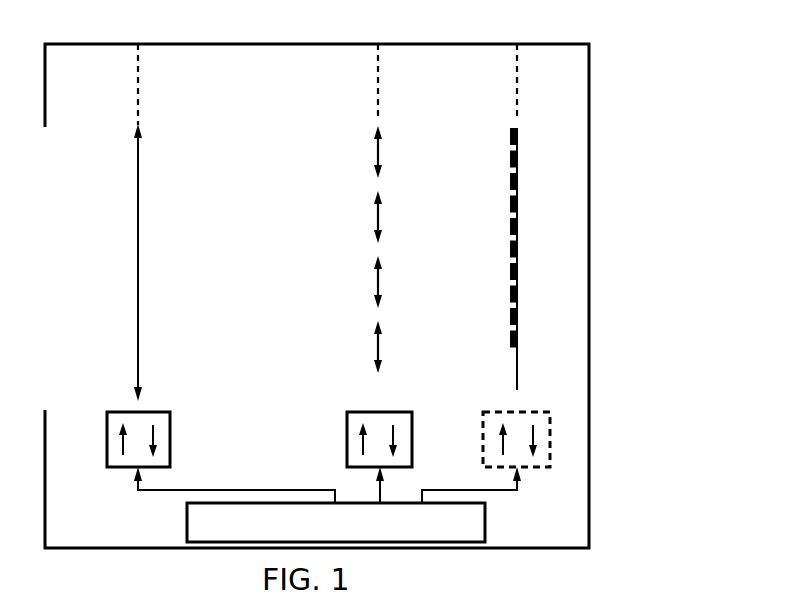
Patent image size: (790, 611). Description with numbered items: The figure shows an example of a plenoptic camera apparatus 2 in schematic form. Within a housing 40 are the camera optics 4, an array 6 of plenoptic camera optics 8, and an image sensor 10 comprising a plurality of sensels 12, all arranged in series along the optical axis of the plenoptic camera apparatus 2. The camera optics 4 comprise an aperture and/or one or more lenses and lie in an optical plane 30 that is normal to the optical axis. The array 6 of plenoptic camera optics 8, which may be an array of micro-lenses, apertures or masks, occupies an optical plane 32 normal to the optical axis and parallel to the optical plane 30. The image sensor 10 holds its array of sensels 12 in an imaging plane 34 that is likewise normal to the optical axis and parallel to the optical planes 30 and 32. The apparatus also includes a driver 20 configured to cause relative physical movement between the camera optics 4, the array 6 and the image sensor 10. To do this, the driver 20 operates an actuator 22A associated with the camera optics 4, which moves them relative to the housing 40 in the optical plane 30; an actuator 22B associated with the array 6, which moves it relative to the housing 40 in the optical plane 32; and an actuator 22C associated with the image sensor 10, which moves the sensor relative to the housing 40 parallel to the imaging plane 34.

The plenoptic camera apparatus 2 is at (602, 40).
The camera optics 4 is at (137, 122).
The array of plenoptic camera optics 6 is at (393, 98).
The plenoptic camera optic 8 is at (376, 152).
The image sensor 10 is at (529, 98).
The sensel 12 is at (519, 137).
The driver 20 is at (485, 524).
The actuator 22A is at (170, 440).
The actuator 22B is at (412, 440).
The actuator 22C is at (550, 440).
The optical plane 30 is at (138, 44).
The optical plane 32 is at (378, 44).
The imaging plane 34 is at (517, 44).
The housing 40 is at (590, 243).